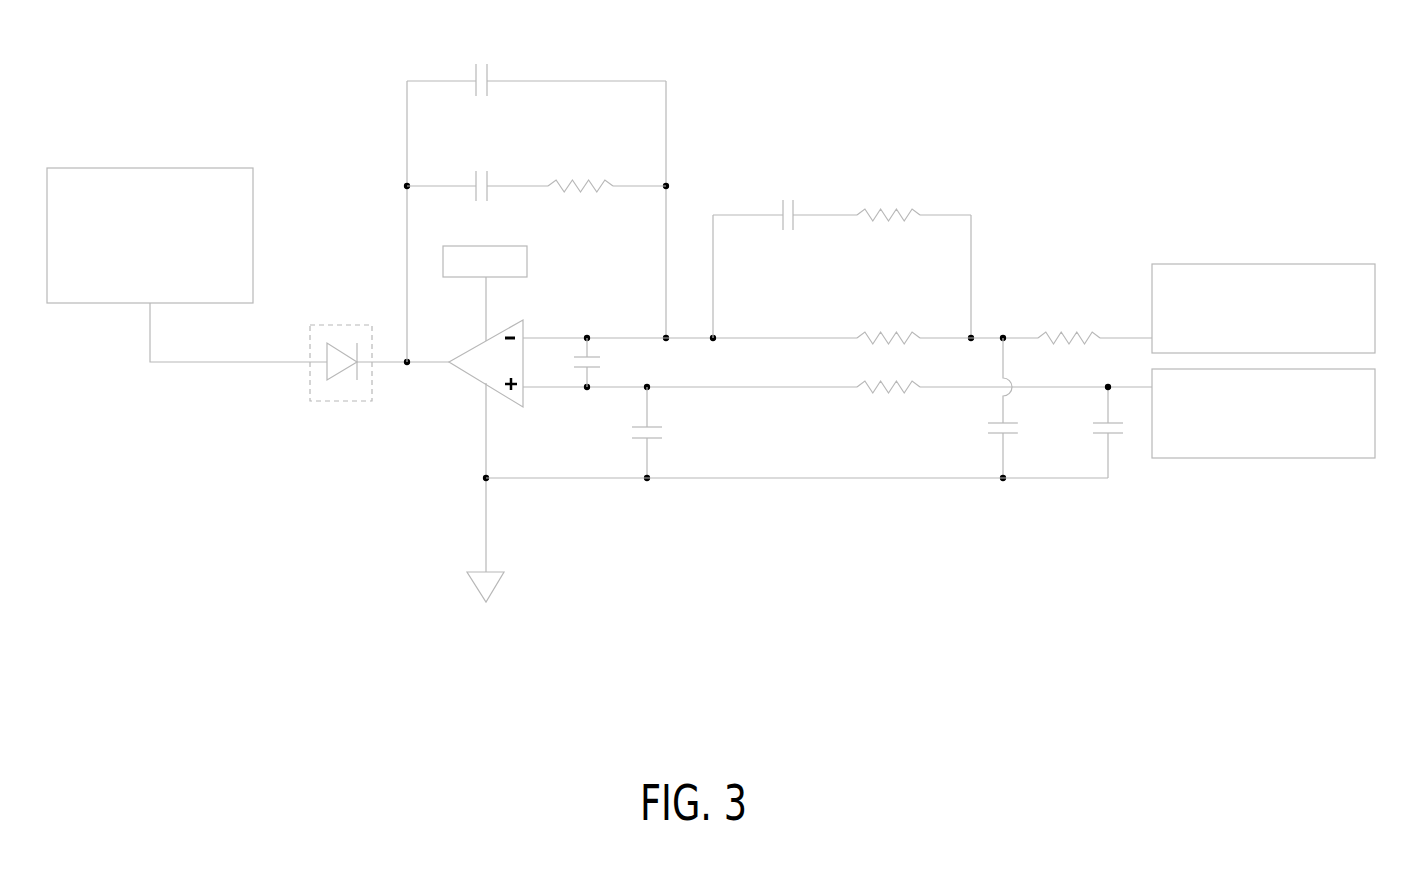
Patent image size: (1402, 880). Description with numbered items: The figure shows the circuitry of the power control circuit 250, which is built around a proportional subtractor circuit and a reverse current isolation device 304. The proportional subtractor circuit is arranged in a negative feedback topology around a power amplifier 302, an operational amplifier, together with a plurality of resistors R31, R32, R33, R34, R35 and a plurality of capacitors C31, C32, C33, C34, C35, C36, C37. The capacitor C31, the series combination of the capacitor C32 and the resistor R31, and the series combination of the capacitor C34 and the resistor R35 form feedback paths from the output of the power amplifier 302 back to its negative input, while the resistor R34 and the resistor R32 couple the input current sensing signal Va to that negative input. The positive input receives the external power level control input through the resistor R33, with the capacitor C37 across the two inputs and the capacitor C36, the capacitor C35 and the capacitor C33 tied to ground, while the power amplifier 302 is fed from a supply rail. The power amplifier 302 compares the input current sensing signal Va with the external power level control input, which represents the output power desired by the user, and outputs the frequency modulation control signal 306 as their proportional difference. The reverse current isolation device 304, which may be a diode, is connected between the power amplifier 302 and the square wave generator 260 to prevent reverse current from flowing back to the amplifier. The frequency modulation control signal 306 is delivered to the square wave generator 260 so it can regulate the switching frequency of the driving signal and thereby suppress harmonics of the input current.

The power control circuit 250 is at (1272, 73).
The square wave generator 260 is at (187, 265).
The power amplifier 302 is at (475, 370).
The reverse current isolation device 304 is at (338, 402).
The frequency modulation control signal 306 is at (397, 360).
The capacitor C31 is at (536, 56).
The capacitor C32 is at (477, 162).
The capacitor C33 is at (1082, 432).
The capacitor C34 is at (785, 187).
The capacitor C35 is at (977, 409).
The capacitor C36 is at (673, 434).
The capacitor C37 is at (614, 362).
The resistor R31 is at (607, 159).
The resistor R32 is at (1095, 314).
The resistor R33 is at (1004, 410).
The resistor R34 is at (947, 313).
The resistor R35 is at (914, 191).